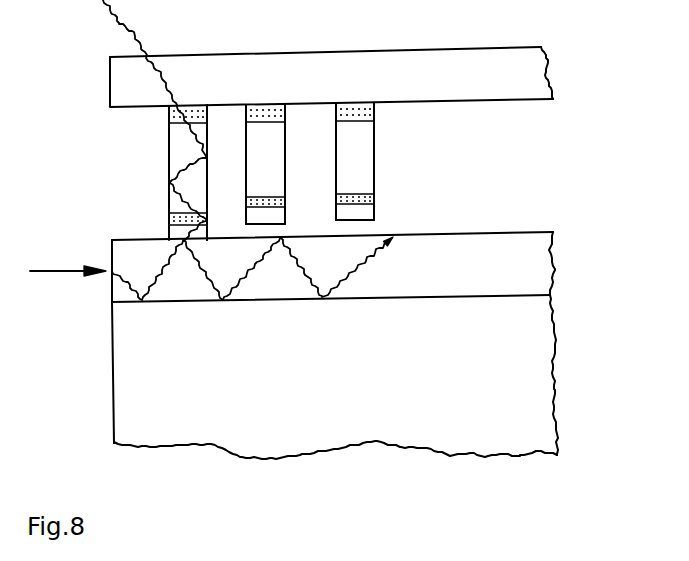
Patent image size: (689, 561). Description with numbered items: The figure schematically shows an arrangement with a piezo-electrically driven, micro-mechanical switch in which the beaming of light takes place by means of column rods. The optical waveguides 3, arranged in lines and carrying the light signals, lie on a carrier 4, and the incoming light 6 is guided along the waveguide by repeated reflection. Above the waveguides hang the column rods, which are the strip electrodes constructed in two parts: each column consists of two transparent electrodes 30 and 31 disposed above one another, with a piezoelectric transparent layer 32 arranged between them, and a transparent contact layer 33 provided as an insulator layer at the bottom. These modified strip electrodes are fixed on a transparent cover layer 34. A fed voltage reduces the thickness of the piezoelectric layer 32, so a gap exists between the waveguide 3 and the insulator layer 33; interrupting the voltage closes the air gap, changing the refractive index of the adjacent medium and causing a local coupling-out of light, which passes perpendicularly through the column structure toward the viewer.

The optical waveguides 3 is at (533, 268).
The carrier 4 is at (528, 365).
The incident radiation 6 is at (42, 278).
The transparent electrode 30 is at (375, 115).
The transparent electrode 31 is at (375, 197).
The piezoelectric transparent layer 32 is at (363, 152).
The transparent contact layer 33 is at (365, 214).
The transparent cover layer 34 is at (525, 75).